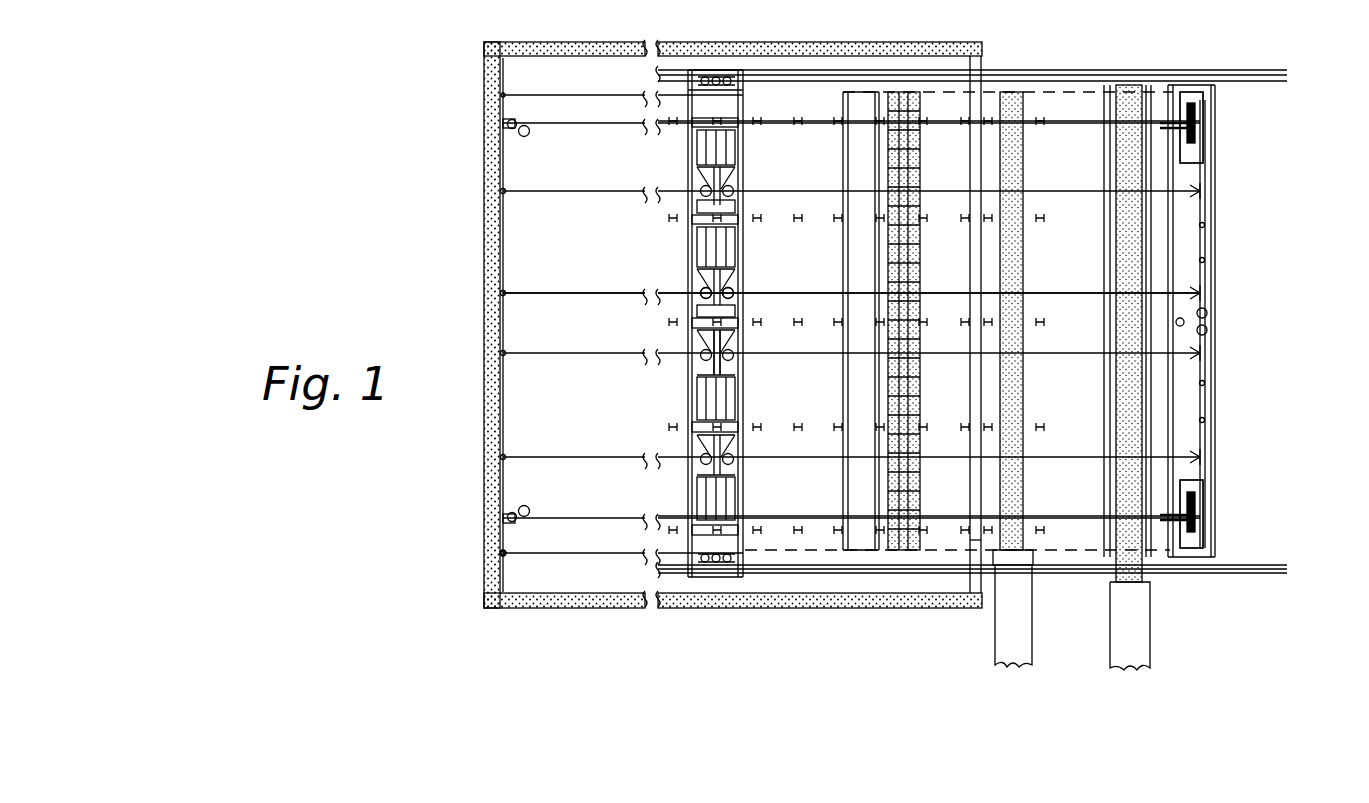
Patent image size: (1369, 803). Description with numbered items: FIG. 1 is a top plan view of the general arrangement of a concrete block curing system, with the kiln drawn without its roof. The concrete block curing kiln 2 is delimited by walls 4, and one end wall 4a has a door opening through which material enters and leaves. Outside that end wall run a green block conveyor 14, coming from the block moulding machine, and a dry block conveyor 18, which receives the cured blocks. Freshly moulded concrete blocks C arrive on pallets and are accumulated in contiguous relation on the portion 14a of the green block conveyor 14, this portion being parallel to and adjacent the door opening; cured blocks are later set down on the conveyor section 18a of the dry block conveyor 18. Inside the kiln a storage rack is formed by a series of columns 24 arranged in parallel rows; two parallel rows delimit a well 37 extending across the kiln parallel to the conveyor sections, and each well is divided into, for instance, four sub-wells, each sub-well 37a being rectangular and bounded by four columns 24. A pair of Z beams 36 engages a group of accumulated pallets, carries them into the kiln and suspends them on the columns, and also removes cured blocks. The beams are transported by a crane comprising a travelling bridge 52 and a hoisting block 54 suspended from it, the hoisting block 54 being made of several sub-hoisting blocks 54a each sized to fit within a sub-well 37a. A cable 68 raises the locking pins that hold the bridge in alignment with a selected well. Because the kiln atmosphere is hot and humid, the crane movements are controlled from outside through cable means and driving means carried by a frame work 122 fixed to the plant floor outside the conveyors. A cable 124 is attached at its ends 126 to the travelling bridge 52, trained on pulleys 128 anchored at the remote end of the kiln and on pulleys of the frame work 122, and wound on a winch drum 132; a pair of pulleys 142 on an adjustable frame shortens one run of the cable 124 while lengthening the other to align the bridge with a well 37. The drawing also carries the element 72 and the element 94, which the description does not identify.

The concrete block curing kiln 2 is at (580, 612).
The walls 4 is at (487, 203).
The end wall 4a is at (966, 551).
The green block conveyor 14 is at (1000, 640).
The portion of the green block conveyor 14a is at (1017, 488).
The dry block conveyor 18 is at (1120, 628).
The conveyor section of the dry block conveyor 18a is at (1130, 262).
The columns 24 is at (798, 326).
The Z beams 36 is at (918, 417).
The well 37 is at (780, 112).
The sub-well 37a is at (803, 184).
The travelling bridge 52 is at (692, 386).
The hoisting block 54 is at (704, 320).
The sub-hoisting blocks 54a is at (697, 399).
The cable 68 is at (572, 78).
The rail anchor 72 is at (500, 555).
The row rail 94 is at (548, 350).
The frame work 122 is at (1216, 469).
The cable 124 is at (594, 128).
The cable ends 126 is at (690, 516).
The pulleys 128 is at (516, 506).
The winch drum 132 is at (1203, 128).
The pair of pulleys 142 is at (1191, 320).
The concrete blocks C is at (907, 218).